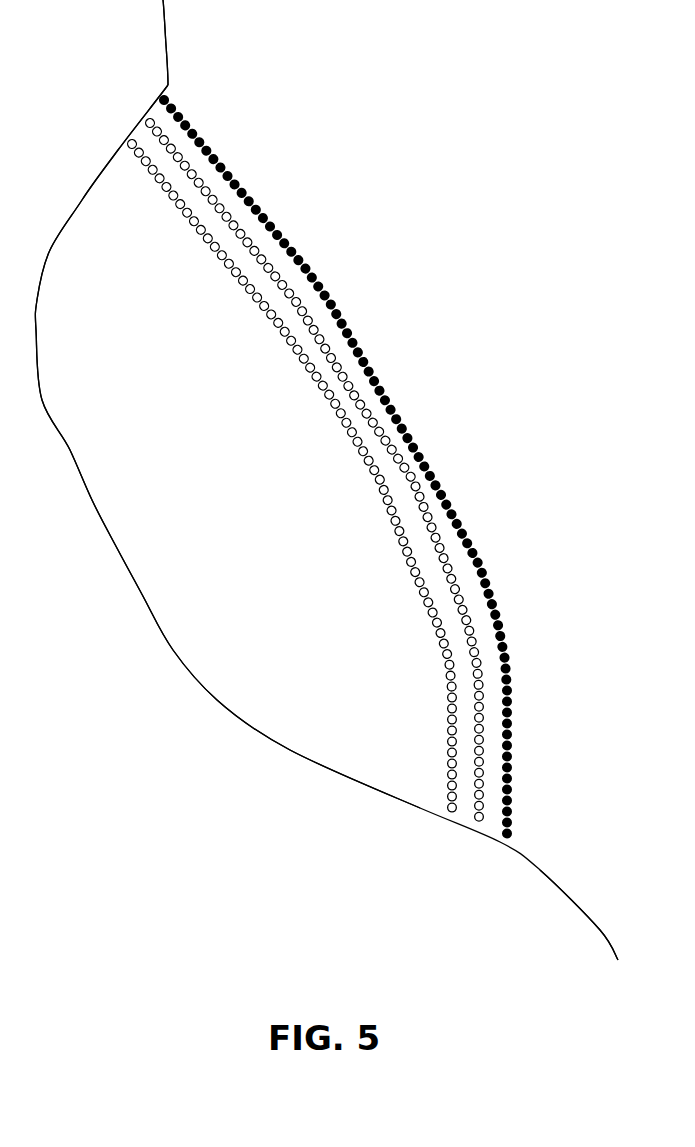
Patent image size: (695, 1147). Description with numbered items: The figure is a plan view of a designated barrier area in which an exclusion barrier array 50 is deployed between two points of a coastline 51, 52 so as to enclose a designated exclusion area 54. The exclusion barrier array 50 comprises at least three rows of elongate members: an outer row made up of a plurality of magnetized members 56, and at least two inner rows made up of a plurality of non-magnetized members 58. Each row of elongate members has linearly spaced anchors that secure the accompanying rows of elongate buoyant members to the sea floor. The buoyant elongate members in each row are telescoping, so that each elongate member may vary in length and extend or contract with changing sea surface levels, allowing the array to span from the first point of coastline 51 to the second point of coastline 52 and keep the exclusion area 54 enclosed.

The exclusion barrier array 50 is at (432, 332).
The point of coastline 51 is at (167, 45).
The point of coastline 52 is at (600, 932).
The designated exclusion area 54 is at (244, 491).
The magnetized members 56 is at (320, 282).
The non-magnetized members 58 is at (232, 222).